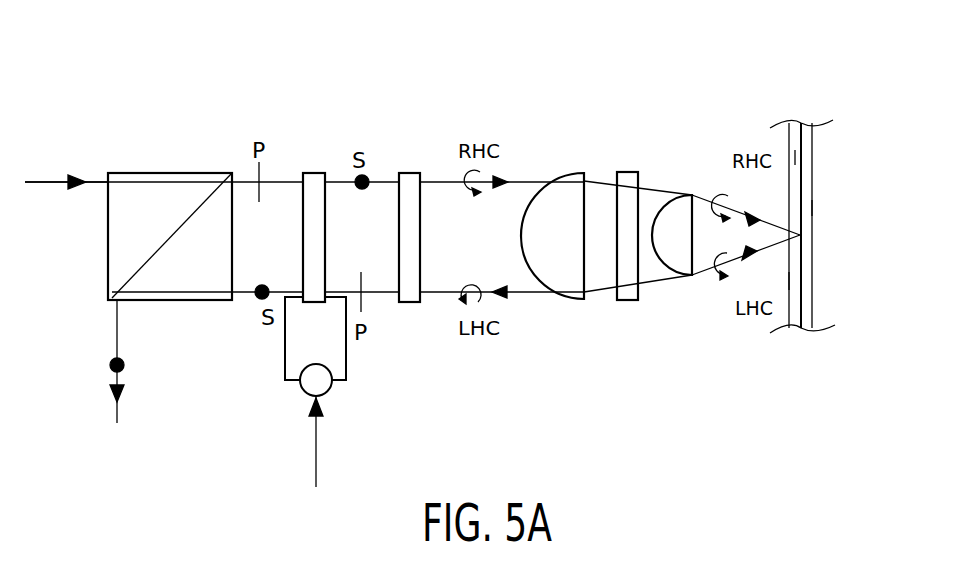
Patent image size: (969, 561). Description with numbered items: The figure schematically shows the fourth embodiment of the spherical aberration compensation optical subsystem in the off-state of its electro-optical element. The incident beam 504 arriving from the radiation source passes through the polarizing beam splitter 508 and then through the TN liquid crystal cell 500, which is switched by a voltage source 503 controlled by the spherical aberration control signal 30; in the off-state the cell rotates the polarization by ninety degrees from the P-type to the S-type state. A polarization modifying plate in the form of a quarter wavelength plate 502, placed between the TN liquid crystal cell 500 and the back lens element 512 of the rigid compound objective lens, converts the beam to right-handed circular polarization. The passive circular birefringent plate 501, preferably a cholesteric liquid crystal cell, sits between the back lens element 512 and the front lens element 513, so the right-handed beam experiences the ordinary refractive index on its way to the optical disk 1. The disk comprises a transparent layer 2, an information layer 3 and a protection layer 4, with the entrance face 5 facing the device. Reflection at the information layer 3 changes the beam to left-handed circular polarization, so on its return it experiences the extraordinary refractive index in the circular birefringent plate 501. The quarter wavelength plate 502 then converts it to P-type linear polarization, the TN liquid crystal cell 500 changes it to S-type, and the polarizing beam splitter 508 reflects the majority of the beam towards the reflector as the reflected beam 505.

The optical disk 1 is at (835, 100).
The transparent layer 2 is at (795, 157).
The information layer 3 is at (800, 186).
The protection layer 4 is at (810, 207).
The disk entrance face 5 is at (790, 280).
The spherical aberration control signal 30 is at (316, 443).
The TN liquid crystal cell 500 is at (312, 172).
The circular birefringent plate 501 is at (628, 171).
The quarter wavelength plate 502 is at (408, 172).
The voltage source 503 is at (332, 392).
The incident beam 504 is at (53, 186).
The reflected beam towards the reflector 505 is at (112, 383).
The polarizing beam splitter 508 is at (176, 172).
The back lens element 512 is at (568, 172).
The front lens element 513 is at (684, 194).